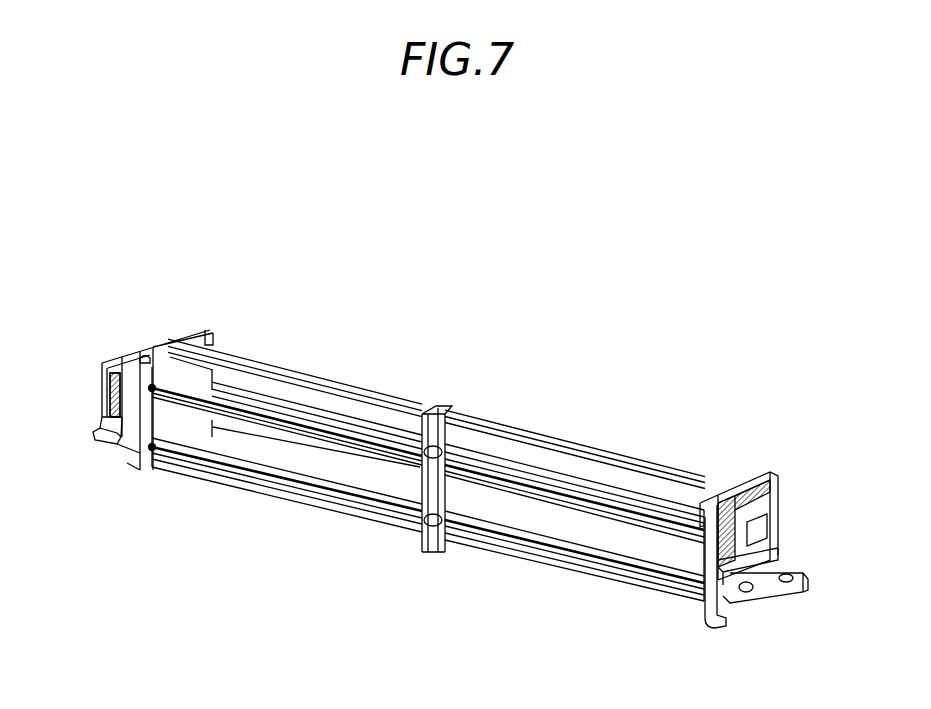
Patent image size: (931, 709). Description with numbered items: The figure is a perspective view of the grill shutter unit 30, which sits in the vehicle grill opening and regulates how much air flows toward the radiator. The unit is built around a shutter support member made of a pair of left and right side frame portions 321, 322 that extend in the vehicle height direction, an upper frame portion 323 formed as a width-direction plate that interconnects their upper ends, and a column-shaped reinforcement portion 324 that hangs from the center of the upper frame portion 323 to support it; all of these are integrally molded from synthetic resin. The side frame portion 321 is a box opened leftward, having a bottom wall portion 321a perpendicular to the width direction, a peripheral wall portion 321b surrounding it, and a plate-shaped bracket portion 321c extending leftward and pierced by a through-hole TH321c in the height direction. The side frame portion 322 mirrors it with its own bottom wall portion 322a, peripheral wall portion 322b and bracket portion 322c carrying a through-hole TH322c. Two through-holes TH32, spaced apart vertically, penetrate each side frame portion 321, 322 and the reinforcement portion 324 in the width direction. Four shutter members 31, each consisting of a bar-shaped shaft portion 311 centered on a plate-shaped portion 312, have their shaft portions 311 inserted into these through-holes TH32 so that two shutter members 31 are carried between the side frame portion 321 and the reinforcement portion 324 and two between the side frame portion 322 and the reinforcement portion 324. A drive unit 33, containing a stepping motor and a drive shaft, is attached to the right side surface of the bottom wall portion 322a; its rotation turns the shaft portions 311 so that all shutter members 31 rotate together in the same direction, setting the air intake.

The grill shutter unit 30 is at (450, 324).
The shutter member 31 is at (350, 508).
The shaft portion 311 is at (637, 534).
The plate-shaped portion 312 is at (270, 490).
The side frame portion 321 is at (768, 529).
The bottom wall portion 321a is at (790, 552).
The peripheral wall portion 321b is at (690, 598).
The bracket portion 321c is at (780, 597).
The side frame portion 322 is at (206, 336).
The bottom wall portion 322a is at (127, 458).
The peripheral wall portion 322b is at (108, 442).
The bracket portion 322c is at (103, 406).
The upper frame portion 323 is at (505, 424).
The reinforcement portion 324 is at (428, 555).
The drive unit 33 is at (122, 348).
The through-hole TH32 is at (155, 386).
The through-hole TH322c is at (104, 392).
The through-hole TH321c is at (797, 573).